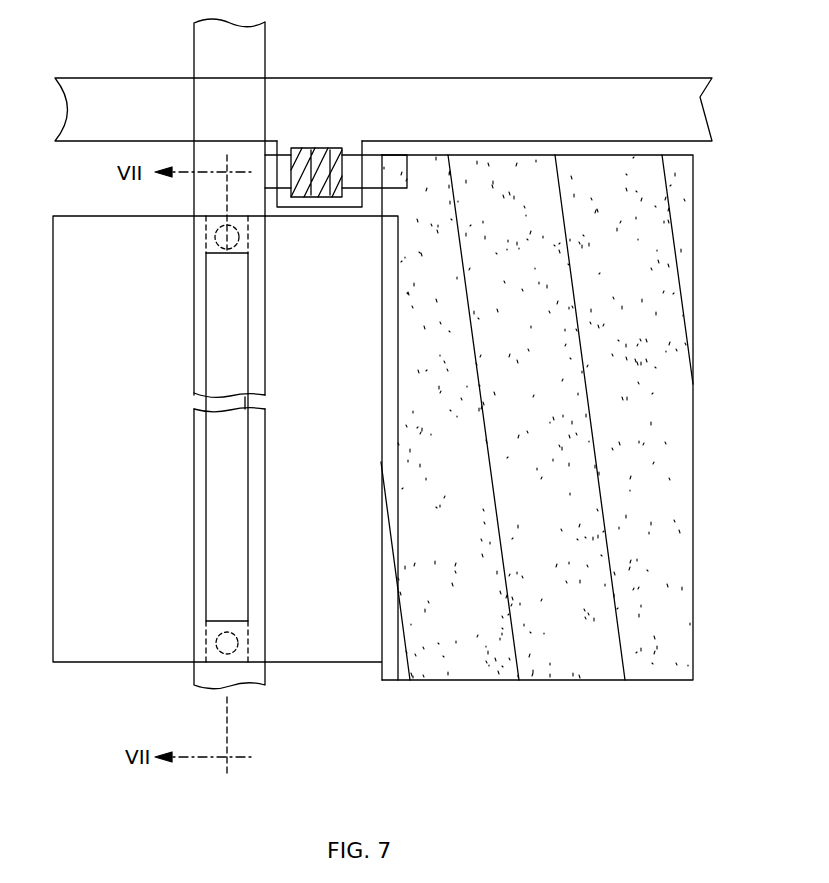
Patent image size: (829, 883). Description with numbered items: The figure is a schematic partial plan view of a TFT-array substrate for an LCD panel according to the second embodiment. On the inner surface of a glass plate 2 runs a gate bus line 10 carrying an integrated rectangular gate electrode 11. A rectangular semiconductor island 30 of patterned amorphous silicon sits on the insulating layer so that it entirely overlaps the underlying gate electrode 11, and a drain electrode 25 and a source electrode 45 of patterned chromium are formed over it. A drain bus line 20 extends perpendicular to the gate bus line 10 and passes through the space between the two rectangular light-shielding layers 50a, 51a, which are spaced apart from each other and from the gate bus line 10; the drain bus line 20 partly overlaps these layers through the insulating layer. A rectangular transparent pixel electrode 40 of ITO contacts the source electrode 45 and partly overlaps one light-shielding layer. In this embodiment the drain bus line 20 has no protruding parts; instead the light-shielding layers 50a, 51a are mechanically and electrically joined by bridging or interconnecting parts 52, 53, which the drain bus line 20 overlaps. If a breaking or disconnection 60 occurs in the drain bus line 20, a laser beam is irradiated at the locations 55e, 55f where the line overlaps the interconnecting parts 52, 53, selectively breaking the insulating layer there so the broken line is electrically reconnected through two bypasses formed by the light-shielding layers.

The glass plate 2 is at (543, 712).
The gate bus line 10 is at (553, 83).
The gate electrode 11 is at (345, 172).
The drain bus line 20 is at (200, 55).
The drain electrode 25 is at (284, 152).
The semiconductor island 30 is at (325, 147).
The pixel electrode 40 is at (687, 477).
The source electrode 45 is at (349, 155).
The light-shielding layer 50a is at (350, 652).
The light-shielding layer 51a is at (78, 657).
The interconnecting part 52 is at (215, 220).
The interconnecting part 53 is at (217, 657).
The location 55e is at (239, 240).
The location 55f is at (231, 655).
The breaking or disconnection 60 is at (244, 403).